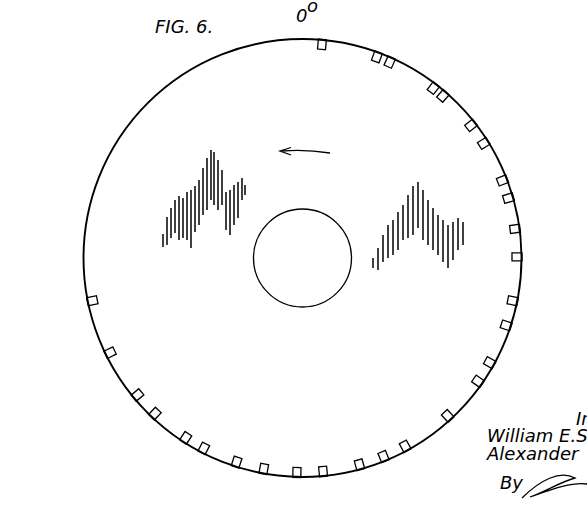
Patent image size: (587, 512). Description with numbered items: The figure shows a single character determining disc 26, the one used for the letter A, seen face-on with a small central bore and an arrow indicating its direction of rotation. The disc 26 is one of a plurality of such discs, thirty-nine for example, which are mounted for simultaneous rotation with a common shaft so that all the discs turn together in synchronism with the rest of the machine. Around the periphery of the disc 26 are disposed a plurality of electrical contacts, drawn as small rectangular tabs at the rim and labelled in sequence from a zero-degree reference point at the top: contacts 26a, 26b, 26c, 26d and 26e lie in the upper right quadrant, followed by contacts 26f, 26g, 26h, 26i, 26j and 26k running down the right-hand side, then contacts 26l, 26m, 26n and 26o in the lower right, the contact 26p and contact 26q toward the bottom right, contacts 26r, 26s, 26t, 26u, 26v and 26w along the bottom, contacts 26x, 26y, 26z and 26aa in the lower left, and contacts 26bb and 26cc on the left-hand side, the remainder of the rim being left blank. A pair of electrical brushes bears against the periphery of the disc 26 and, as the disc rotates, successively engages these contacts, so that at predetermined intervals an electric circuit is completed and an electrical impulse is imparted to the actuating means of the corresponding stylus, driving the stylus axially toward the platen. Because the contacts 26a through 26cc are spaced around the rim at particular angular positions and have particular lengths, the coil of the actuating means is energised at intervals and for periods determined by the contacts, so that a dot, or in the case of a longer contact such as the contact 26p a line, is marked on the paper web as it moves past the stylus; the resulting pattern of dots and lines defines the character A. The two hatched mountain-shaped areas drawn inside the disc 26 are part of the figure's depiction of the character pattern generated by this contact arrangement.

The character determining disc 26 is at (163, 110).
The electrical contact 26a is at (317, 46).
The electrical contact 26b is at (377, 55).
The electrical contact 26c is at (386, 66).
The electrical contact 26d is at (434, 86).
The electrical contact 26e is at (437, 99).
The electrical contact 26f is at (476, 122).
The electrical contact 26g is at (480, 146).
The electrical contact 26h is at (507, 180).
The electrical contact 26i is at (503, 198).
The electrical contact 26j is at (522, 229).
The electrical contact 26k is at (522, 258).
The electrical contact 26l is at (515, 301).
The electrical contact 26m is at (510, 324).
The electrical contact 26n is at (495, 363).
The electrical contact 26o is at (483, 382).
The electrical contact 26p is at (452, 417).
The electrical contact 26q is at (410, 443).
The electrical contact 26r is at (383, 448).
The electrical contact 26s is at (359, 456).
The electrical contact 26t is at (323, 463).
The electrical contact 26u is at (297, 464).
The electrical contact 26v is at (265, 460).
The electrical contact 26w is at (235, 452).
The electrical contact 26x is at (198, 448).
The electrical contact 26y is at (181, 438).
The electrical contact 26z is at (150, 416).
The electrical contact 26aa is at (135, 396).
The electrical contact 26bb is at (106, 351).
The electrical contact 26cc is at (90, 300).